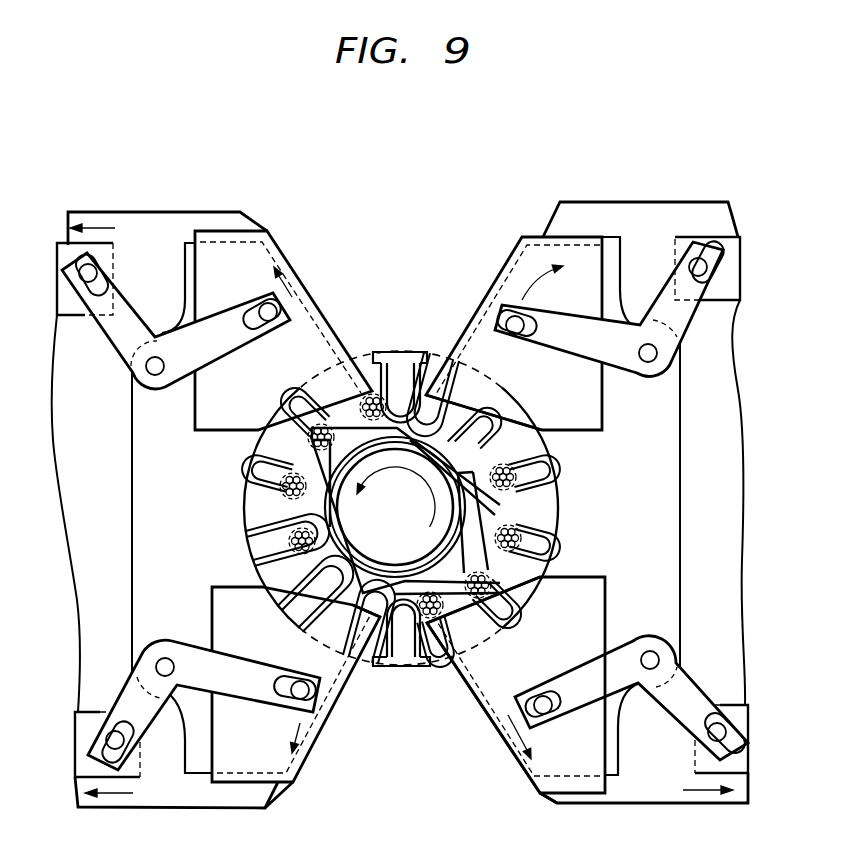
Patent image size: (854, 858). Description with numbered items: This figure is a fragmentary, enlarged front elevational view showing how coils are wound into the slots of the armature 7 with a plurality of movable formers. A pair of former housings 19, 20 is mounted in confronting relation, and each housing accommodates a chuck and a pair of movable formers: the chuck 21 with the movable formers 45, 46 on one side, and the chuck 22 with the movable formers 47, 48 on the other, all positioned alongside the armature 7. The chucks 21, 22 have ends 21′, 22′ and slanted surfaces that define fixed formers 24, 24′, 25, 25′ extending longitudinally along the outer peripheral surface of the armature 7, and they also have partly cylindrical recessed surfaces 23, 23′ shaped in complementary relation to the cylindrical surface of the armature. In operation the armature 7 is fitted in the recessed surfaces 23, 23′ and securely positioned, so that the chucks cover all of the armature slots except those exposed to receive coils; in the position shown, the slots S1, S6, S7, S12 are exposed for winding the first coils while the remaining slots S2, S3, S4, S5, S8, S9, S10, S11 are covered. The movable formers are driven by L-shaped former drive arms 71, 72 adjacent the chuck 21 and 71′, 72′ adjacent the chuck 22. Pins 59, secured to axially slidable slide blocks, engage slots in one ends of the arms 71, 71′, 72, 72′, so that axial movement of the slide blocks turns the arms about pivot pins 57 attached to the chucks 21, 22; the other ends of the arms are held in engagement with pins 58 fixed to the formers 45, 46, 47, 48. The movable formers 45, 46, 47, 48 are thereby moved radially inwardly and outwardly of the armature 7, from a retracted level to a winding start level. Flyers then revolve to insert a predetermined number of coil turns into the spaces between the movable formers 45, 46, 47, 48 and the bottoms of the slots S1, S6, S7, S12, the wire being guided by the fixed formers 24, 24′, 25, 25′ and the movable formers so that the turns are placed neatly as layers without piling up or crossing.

The armature 7 is at (556, 508).
The former housing 19 is at (168, 214).
The former housing 20 is at (645, 200).
The chuck 21 is at (188, 764).
The end 21′ is at (363, 668).
The chuck 22 is at (612, 778).
The end 22′ is at (443, 667).
The recessed surface 23 is at (248, 505).
The recessed surface 23′ is at (560, 485).
The fixed former 24 is at (318, 298).
The fixed former 24′ is at (333, 712).
The fixed former 25 is at (490, 310).
The fixed former 25′ is at (505, 776).
The movable former 45 is at (320, 330).
The movable former 46 is at (325, 745).
The movable former 47 is at (515, 258).
The movable former 48 is at (507, 755).
The pivot pin 57 is at (146, 374).
The pin 58 is at (262, 306).
The pin 59 is at (92, 262).
The former drive arm 71 is at (105, 332).
The former drive arm 71′ is at (705, 312).
The former drive arm 72 is at (123, 690).
The former drive arm 72′ is at (695, 680).
The slot S1 is at (258, 433).
The coil slot 2 S2 is at (318, 425).
The coil slot 3 S3 is at (375, 385).
The coil slot 4 S4 is at (430, 380).
The coil slot 5 S5 is at (485, 425).
The slot S6 is at (553, 470).
The slot S7 is at (527, 542).
The coil slot 8 S8 is at (490, 598).
The coil slot 9 S9 is at (453, 648).
The coil slot 10 S10 is at (327, 642).
The coil slot 11 S11 is at (300, 604).
The slot S12 is at (253, 550).